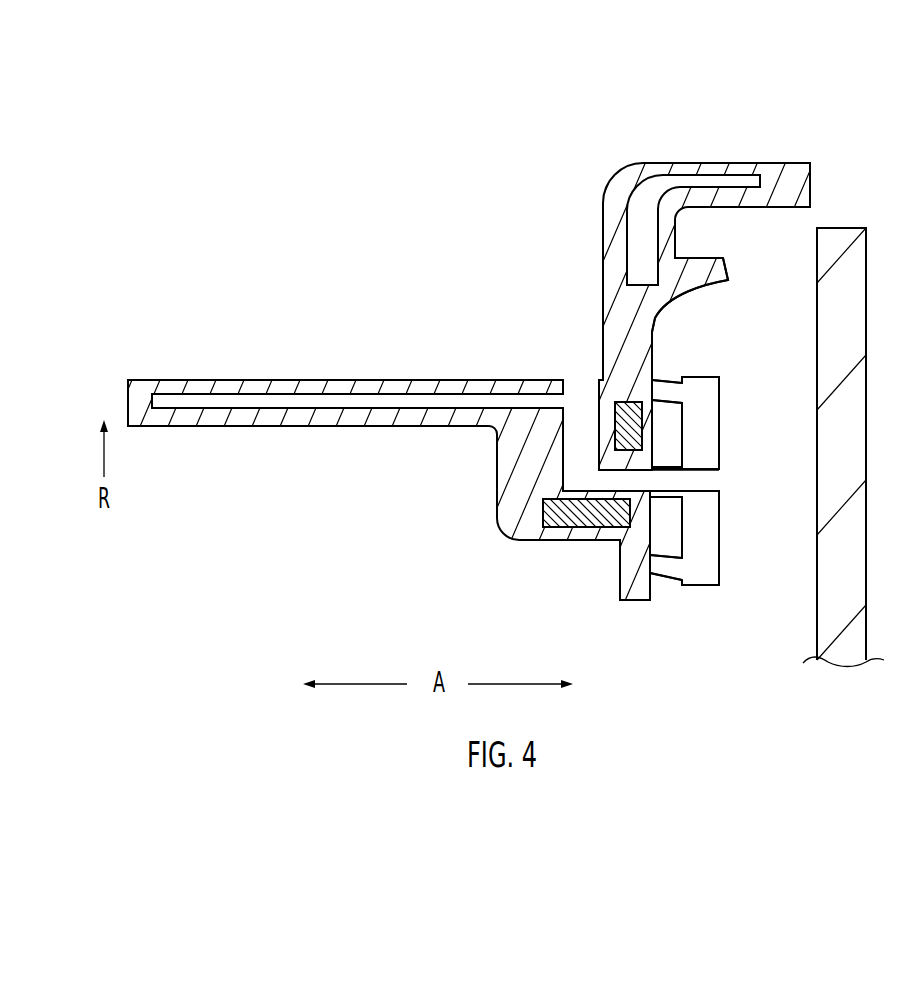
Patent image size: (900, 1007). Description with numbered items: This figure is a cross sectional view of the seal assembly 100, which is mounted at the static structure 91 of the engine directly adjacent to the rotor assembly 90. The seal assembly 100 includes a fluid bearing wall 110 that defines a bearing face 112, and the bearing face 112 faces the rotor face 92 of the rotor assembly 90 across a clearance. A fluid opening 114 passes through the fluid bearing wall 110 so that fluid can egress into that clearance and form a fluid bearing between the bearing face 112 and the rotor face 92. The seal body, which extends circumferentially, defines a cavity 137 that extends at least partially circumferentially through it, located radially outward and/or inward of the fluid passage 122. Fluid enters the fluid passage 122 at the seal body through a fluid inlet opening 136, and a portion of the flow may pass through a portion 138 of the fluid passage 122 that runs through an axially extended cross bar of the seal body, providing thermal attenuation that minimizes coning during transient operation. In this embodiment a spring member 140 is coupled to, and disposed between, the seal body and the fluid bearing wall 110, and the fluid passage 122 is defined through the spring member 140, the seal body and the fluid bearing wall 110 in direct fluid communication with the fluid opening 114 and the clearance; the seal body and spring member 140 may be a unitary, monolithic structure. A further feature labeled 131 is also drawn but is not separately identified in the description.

The rotor assembly 90 is at (817, 633).
The static structure 91 is at (438, 87).
The rotor face 92 is at (815, 617).
The seal assembly 100 is at (510, 163).
The fluid bearing wall 110 is at (697, 577).
The bearing face 112 is at (727, 568).
The fluid opening 114 is at (722, 475).
The fluid passage 122 is at (582, 403).
The lip 131 is at (725, 258).
The fluid inlet opening 136 is at (580, 378).
The cavity 137 is at (635, 222).
The portion of the fluid passage 138 is at (288, 380).
The spring member 140 is at (663, 377).